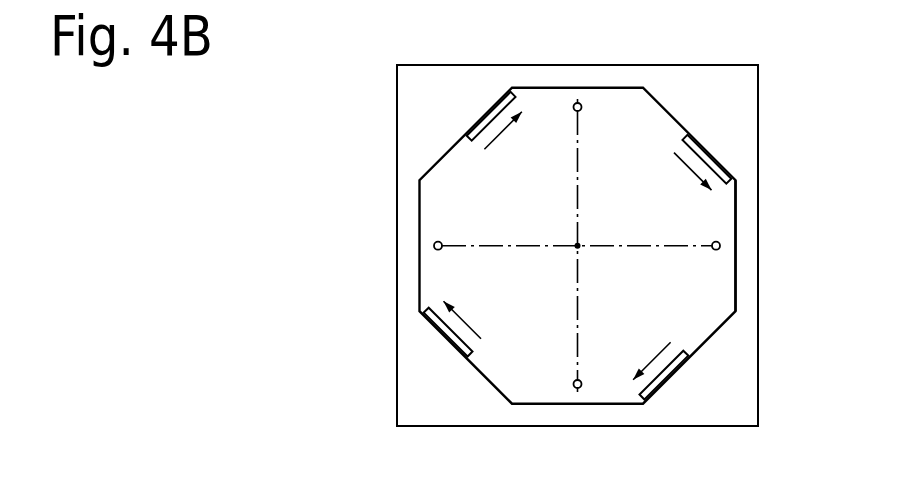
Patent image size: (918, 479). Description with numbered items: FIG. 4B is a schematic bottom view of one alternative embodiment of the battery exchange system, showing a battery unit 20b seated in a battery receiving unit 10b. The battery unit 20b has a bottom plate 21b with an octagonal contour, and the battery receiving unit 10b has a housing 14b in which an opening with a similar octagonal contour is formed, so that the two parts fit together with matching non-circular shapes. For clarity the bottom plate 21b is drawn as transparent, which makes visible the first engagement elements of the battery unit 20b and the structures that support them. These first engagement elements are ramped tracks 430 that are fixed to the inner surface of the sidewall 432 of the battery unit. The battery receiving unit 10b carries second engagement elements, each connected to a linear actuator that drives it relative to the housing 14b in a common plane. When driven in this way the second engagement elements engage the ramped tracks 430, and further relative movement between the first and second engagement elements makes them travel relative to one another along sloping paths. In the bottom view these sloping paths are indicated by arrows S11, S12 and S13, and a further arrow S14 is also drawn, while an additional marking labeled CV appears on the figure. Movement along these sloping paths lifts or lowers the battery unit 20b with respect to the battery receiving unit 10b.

The battery receiving unit 10b is at (576, 231).
The housing 14b is at (727, 90).
The battery unit 20b is at (444, 217).
The bottom plate 21b is at (582, 107).
The ramped tracks 430 is at (514, 90).
The sidewall 432 is at (738, 295).
The center point C and vertex V CV is at (578, 245).
The arrow S11 is at (511, 141).
The arrow S12 is at (679, 172).
The arrow S13 is at (646, 353).
The fourth sensing direction S14 is at (478, 320).